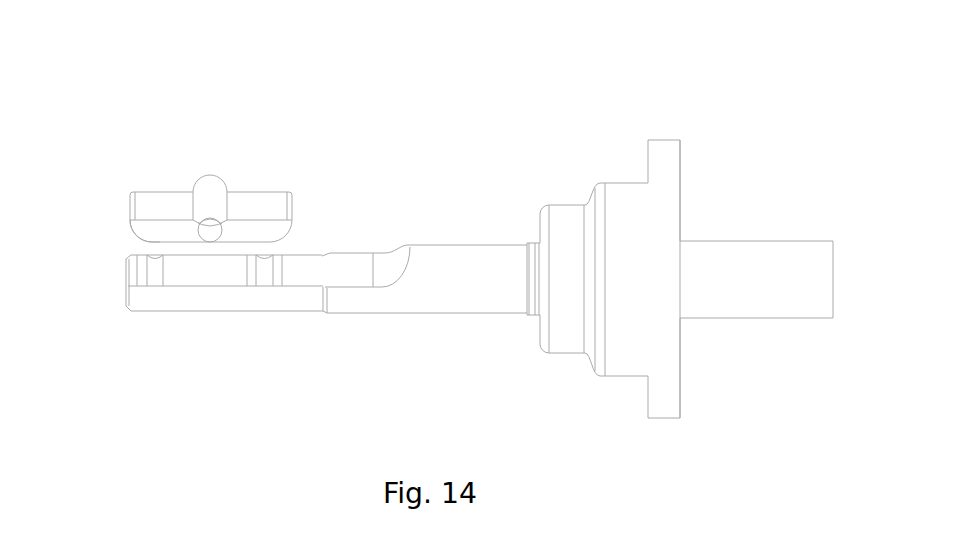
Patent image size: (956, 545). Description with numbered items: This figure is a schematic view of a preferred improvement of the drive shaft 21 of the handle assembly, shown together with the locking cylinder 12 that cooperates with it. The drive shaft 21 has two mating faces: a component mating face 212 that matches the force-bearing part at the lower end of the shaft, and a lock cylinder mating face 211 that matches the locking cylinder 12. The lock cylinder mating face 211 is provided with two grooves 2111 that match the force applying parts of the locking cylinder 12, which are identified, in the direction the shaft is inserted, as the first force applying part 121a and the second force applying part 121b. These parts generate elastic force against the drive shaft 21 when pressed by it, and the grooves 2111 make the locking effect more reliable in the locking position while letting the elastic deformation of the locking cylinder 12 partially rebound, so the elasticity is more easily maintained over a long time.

The locking cylinder 12 is at (218, 142).
The first force applying part 121a is at (268, 242).
The second force applying part 121b is at (152, 242).
The drive shaft 21 is at (431, 254).
The lock cylinder mating face 211 is at (176, 341).
The groove 2111 is at (147, 287).
The component mating face 212 is at (298, 312).